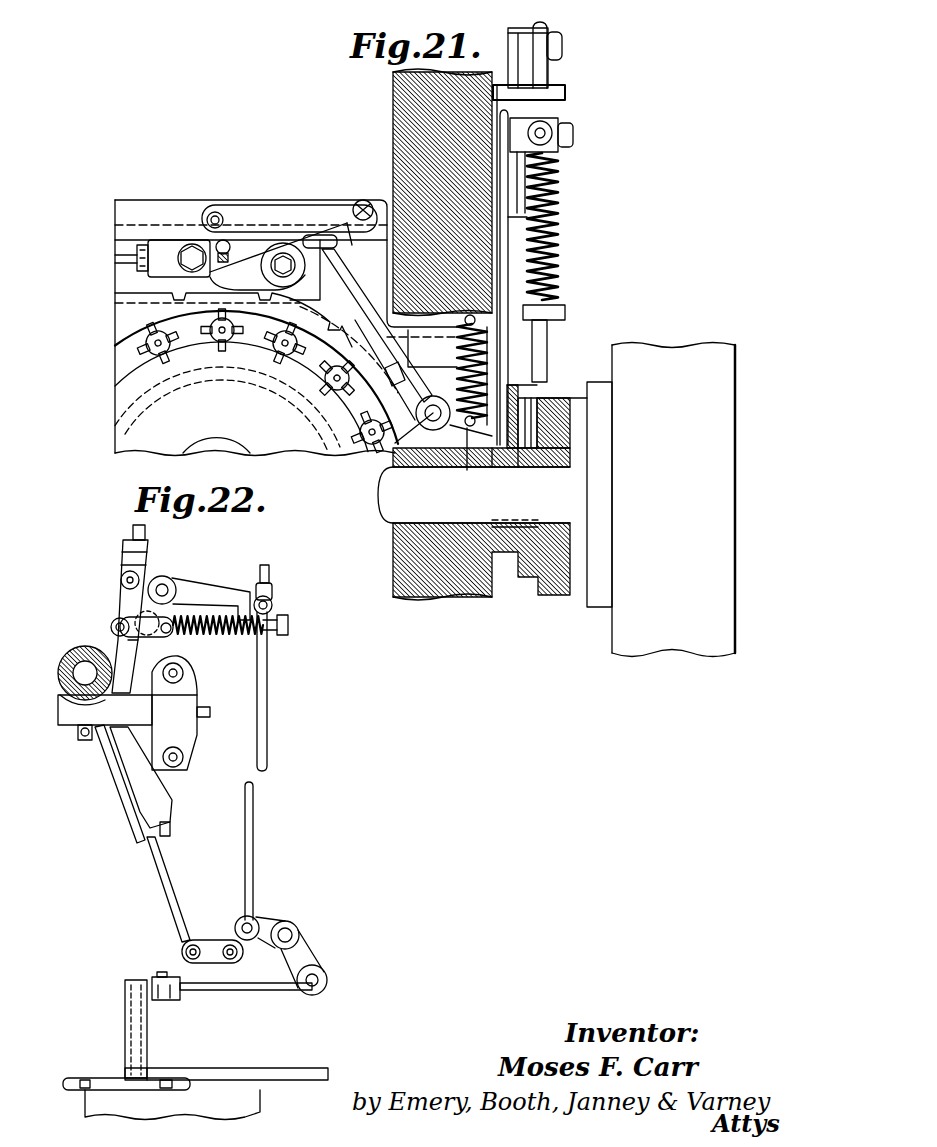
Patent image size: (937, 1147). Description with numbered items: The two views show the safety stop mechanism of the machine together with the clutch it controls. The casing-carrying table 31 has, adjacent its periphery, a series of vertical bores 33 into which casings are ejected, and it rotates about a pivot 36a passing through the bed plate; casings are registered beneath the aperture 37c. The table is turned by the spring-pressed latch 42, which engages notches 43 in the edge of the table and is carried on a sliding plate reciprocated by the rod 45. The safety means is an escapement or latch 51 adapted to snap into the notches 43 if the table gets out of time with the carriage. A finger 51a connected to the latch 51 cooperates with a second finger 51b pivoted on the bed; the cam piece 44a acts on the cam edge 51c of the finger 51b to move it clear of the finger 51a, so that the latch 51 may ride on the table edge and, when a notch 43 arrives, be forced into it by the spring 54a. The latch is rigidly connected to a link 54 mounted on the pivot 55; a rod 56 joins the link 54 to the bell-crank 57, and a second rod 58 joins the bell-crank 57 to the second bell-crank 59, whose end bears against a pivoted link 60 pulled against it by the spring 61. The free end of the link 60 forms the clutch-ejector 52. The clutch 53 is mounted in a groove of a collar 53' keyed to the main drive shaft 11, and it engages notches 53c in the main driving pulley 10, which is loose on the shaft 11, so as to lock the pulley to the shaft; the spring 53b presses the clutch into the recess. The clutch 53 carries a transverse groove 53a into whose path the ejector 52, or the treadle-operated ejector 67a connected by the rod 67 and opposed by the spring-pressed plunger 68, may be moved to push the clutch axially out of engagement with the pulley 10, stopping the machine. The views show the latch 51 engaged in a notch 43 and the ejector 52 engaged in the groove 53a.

In FIG. 21, the main driving pulley 10 is at (660, 357).
In FIG. 21, the main drive shaft 11 is at (397, 512).
In FIG. 22, the main drive shaft 11 is at (80, 650).
In FIG. 21, the casing-carrying table 31 is at (127, 337).
In FIG. 22, the casing-carrying table 31 is at (72, 1078).
In FIG. 21, the vertical bores 33 is at (127, 374).
In FIG. 21, the pivot 36a is at (232, 445).
In FIG. 21, the aperture 37c is at (192, 342).
In FIG. 21, the spring-pressed latch 42 is at (243, 262).
In FIG. 21, the notches 43 is at (160, 293).
In FIG. 22, the notches 43 is at (85, 1092).
In FIG. 21, the cam piece 44a is at (320, 240).
In FIG. 21, the rod 45 is at (117, 257).
In FIG. 21, the escapement 51 is at (400, 352).
In FIG. 22, the escapement 51 is at (155, 1078).
In FIG. 21, the finger 51a is at (358, 294).
In FIG. 22, the finger 51a is at (225, 1072).
In FIG. 21, the second finger 51b is at (290, 218).
In FIG. 21, the cam edge 51c is at (349, 228).
In FIG. 21, the clutch-ejector 52 is at (522, 386).
In FIG. 22, the clutch-ejector 52 is at (125, 676).
In FIG. 21, the clutch 53 is at (562, 408).
In FIG. 22, the clutch 53 is at (111, 629).
In FIG. 21, the collar 53' is at (481, 568).
In FIG. 22, the collar 53' is at (72, 673).
In FIG. 21, the transverse groove 53a is at (517, 440).
In FIG. 21, the spring 53b is at (495, 467).
In FIG. 21, the notches 53c is at (570, 443).
In FIG. 21, the link 54 is at (463, 461).
In FIG. 22, the link 54 is at (155, 978).
In FIG. 21, the spring 54a is at (458, 355).
In FIG. 21, the pivot 55 is at (395, 443).
In FIG. 22, the pivot 55 is at (147, 1017).
In FIG. 21, the rod 56 is at (545, 82).
In FIG. 22, the rod 56 is at (295, 990).
In FIG. 21, the bell-crank 57 is at (512, 57).
In FIG. 22, the bell-crank 57 is at (300, 950).
In FIG. 21, the second rod 58 is at (560, 125).
In FIG. 22, the second rod 58 is at (256, 812).
In FIG. 21, the second bell-crank 59 is at (510, 265).
In FIG. 22, the second bell-crank 59 is at (210, 593).
In FIG. 22, the pivoted link 60 is at (125, 593).
In FIG. 21, the spring 61 is at (522, 185).
In FIG. 22, the spring 61 is at (232, 636).
In FIG. 22, the rod 67 is at (118, 800).
In FIG. 22, the clutch ejector 67a is at (78, 732).
In FIG. 22, the spring-pressed plunger 68 is at (118, 740).